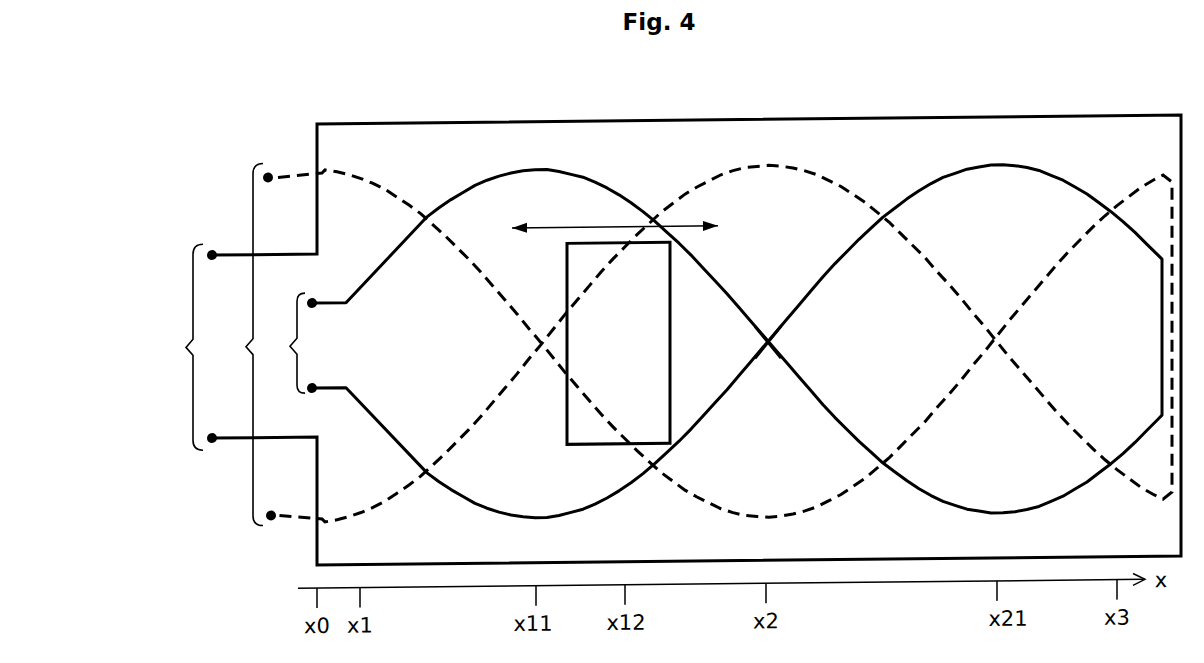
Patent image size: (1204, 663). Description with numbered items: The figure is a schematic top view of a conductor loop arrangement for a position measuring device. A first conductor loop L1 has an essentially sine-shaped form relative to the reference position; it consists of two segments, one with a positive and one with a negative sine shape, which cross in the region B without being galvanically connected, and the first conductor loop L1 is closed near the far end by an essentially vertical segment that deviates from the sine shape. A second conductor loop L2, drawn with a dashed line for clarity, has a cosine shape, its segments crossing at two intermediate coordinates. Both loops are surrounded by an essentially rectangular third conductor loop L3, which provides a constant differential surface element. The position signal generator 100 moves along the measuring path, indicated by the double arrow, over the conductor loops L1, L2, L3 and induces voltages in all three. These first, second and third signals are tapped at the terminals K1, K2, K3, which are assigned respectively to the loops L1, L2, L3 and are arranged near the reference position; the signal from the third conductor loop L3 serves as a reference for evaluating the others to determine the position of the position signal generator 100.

The third conductor loop L3 is at (486, 121).
The first conductor loop L1 is at (441, 203).
The second conductor loop L2 is at (675, 202).
The terminals K1 is at (284, 343).
The terminals K2 is at (237, 345).
The terminals K3 is at (177, 347).
The position signal generator 100 is at (599, 342).
The region B is at (767, 350).